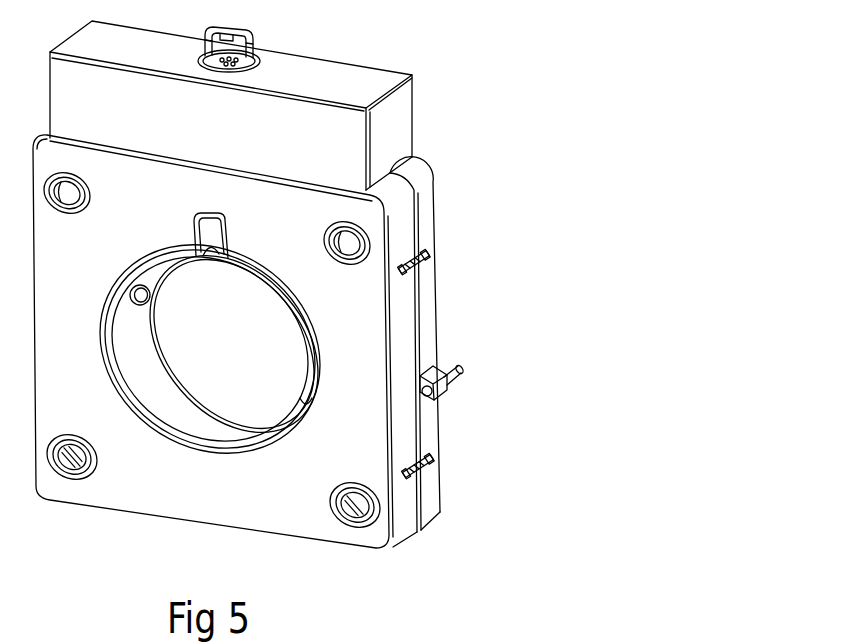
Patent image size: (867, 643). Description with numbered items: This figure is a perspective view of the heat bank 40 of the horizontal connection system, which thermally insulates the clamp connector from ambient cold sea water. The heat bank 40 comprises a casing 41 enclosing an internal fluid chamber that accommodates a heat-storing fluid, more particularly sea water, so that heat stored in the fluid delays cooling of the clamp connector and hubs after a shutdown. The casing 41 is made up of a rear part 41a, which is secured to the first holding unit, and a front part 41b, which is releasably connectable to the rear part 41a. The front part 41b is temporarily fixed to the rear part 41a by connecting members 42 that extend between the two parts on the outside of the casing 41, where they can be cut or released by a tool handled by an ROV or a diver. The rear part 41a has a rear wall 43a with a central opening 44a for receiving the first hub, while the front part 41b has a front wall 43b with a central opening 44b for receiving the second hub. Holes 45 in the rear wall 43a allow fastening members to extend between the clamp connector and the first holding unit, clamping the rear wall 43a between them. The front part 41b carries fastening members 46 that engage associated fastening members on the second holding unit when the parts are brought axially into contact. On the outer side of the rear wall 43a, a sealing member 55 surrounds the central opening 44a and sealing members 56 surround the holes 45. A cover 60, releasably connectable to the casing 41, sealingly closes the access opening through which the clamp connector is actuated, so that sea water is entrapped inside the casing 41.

The heat bank 40 is at (452, 181).
The casing 41 is at (438, 297).
The rear part 41a is at (405, 513).
The front part 41b is at (428, 498).
The connecting member 42 is at (420, 252).
The rear wall 43a is at (135, 490).
The front wall 43b is at (128, 325).
The central opening 44a is at (225, 425).
The central opening 44b is at (248, 290).
The hole 45 is at (77, 200).
The fastening member 46 is at (452, 373).
The sealing member 55 is at (307, 410).
The sealing member 56 is at (72, 182).
The cover 60 is at (377, 73).